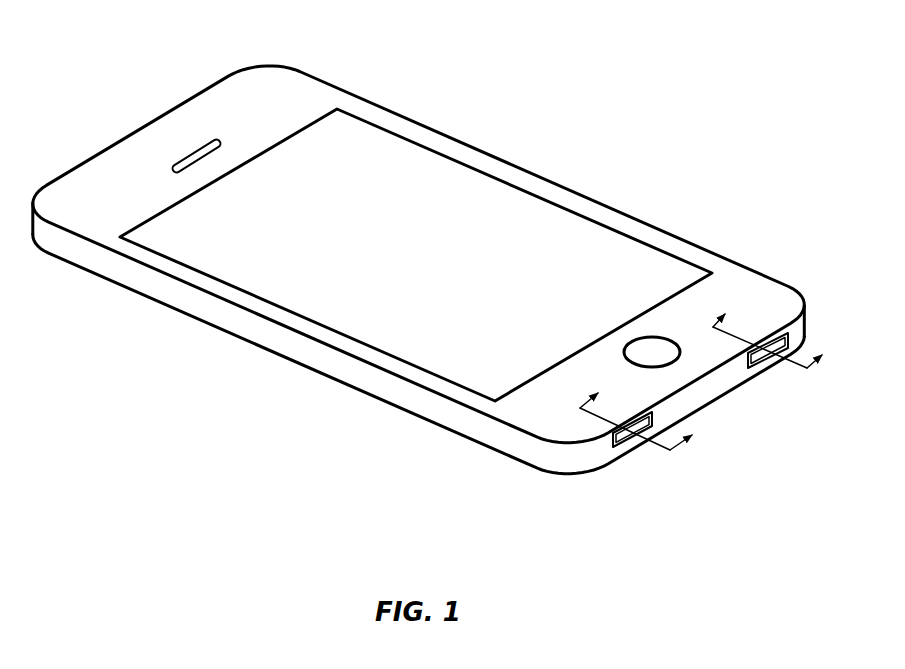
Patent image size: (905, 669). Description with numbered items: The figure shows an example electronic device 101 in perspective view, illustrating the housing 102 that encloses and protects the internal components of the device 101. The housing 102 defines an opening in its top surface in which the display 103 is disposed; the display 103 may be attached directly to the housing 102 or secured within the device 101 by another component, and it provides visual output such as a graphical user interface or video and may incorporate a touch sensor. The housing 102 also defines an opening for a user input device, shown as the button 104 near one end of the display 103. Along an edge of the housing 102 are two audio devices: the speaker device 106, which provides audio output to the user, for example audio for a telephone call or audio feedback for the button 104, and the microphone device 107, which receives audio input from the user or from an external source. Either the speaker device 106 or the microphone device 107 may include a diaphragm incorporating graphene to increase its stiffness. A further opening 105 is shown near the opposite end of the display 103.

The electronic device 101 is at (460, 80).
The housing 102 is at (83, 165).
The display 103 is at (573, 226).
The button 104 is at (664, 346).
The speaker port 105 is at (199, 150).
The speaker device 106 is at (618, 450).
The microphone device 107 is at (755, 370).